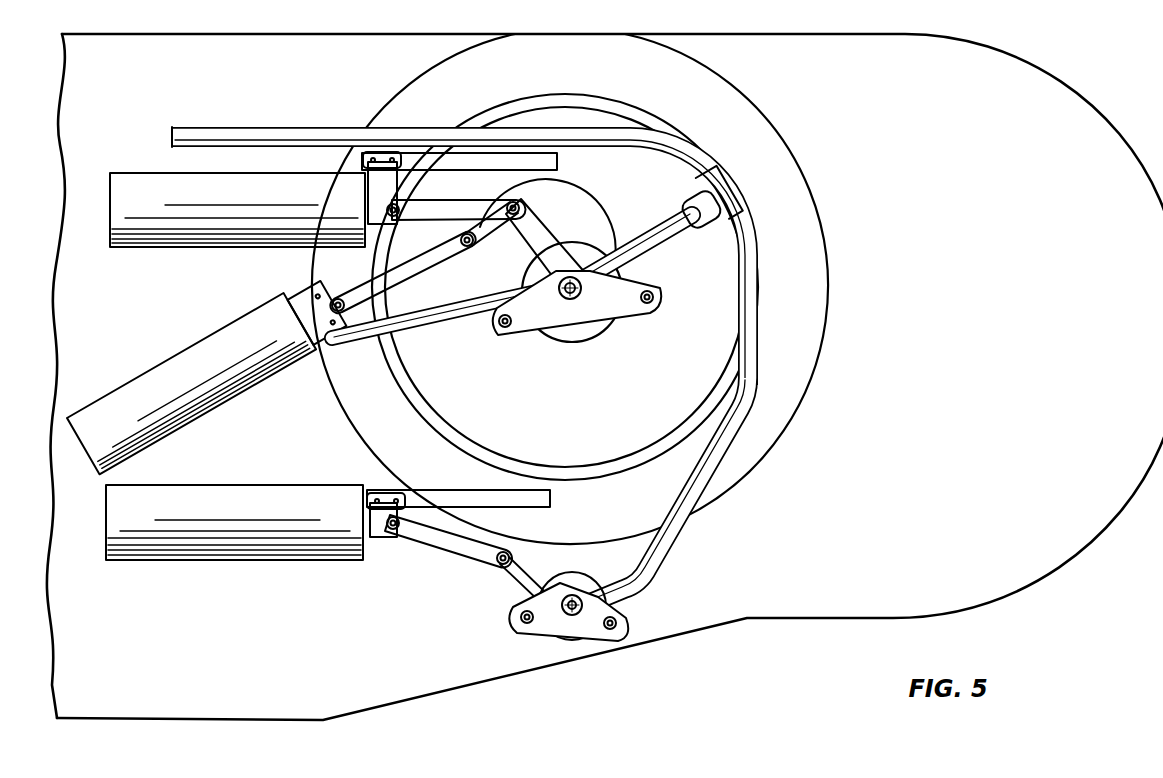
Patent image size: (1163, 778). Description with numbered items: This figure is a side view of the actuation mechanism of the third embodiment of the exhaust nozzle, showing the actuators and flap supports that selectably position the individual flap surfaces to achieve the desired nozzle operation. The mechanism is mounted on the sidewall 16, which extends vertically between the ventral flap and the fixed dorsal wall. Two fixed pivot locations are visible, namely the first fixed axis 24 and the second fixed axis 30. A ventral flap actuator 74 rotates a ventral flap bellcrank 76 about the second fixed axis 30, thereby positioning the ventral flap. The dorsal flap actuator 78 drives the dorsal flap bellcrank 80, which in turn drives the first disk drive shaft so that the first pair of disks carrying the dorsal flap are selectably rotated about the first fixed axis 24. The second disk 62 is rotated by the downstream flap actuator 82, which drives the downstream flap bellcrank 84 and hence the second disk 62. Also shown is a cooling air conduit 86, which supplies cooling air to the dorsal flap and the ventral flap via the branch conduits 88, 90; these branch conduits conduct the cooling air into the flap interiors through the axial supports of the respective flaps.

The sidewall 16 is at (928, 405).
The first fixed axis 24 is at (577, 303).
The second fixed axis 30 is at (578, 597).
The second disk 62 is at (627, 373).
The ventral flap actuator 74 is at (224, 515).
The ventral flap bellcrank 76 is at (517, 578).
The dorsal flap actuator 78 is at (222, 205).
The dorsal flap bellcrank 80 is at (534, 228).
The downstream flap actuator 82 is at (317, 338).
The downstream flap bellcrank 84 is at (588, 185).
The cooling air conduit 86 is at (281, 133).
The branch conduit 88 is at (667, 229).
The branch conduit 90 is at (654, 550).